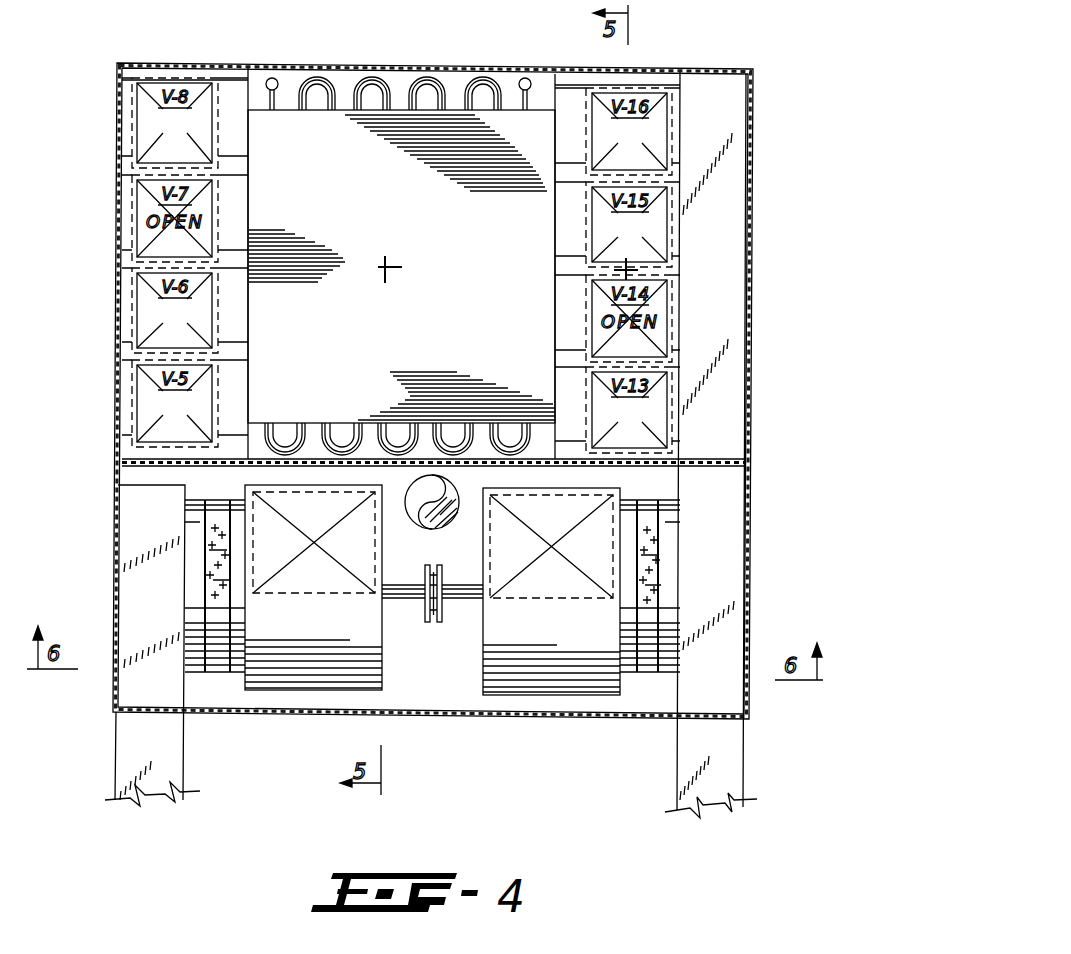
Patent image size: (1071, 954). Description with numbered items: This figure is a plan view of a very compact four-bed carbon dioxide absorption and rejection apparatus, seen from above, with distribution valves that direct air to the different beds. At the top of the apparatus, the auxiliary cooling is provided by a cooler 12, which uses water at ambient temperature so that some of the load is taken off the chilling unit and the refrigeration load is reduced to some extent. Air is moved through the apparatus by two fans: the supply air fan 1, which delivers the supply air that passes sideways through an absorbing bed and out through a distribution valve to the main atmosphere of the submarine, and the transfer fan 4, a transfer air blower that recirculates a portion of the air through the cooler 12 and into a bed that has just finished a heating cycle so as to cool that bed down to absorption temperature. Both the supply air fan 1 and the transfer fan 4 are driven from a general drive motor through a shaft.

The cooler 12 is at (389, 218).
The supply air fan 1 is at (318, 629).
The transfer air blower 4 is at (560, 634).